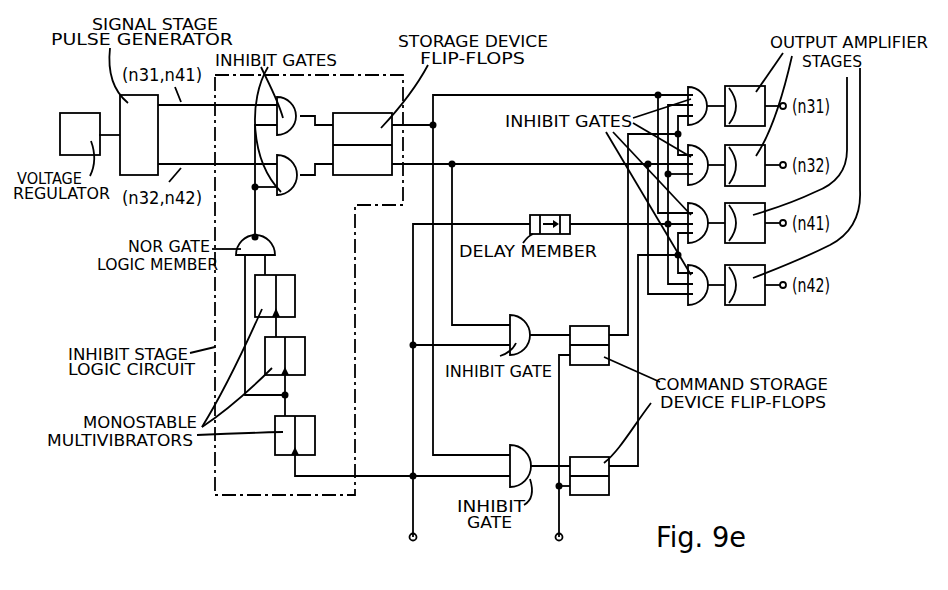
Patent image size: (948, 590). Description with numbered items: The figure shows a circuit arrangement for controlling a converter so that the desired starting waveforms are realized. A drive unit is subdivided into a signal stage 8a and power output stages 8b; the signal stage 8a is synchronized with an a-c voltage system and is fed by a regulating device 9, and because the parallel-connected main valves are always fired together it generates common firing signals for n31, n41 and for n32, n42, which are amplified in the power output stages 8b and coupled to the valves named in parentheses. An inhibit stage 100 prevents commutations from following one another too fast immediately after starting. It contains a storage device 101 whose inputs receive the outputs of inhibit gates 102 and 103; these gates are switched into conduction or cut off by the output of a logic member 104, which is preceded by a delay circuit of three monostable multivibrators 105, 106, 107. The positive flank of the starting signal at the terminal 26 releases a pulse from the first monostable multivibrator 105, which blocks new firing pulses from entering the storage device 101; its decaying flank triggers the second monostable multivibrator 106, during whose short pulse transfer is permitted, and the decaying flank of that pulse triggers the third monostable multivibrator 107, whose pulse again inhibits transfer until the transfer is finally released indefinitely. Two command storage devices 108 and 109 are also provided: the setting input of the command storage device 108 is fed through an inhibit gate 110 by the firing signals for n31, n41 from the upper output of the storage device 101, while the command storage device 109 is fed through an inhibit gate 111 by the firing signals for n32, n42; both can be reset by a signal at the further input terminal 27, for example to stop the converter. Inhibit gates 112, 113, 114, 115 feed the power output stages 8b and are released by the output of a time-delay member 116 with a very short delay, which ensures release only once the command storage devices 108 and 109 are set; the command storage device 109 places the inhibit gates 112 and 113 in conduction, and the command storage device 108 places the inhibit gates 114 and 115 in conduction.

The regulating device 9 is at (80, 134).
The signal stage 8a is at (139, 135).
The power output stages 8b is at (757, 75).
The inhibit stage 100 is at (215, 327).
The storage device 101 is at (354, 112).
The inhibit gate 102 is at (289, 106).
The inhibit gate 103 is at (287, 189).
The logic member 104 is at (275, 244).
The first monostable multivibrator 105 is at (309, 415).
The second monostable multivibrator 106 is at (306, 348).
The third monostable multivibrator 107 is at (295, 286).
The command storage device 108 is at (582, 457).
The command storage device 109 is at (582, 326).
The inhibit gate 110 is at (520, 445).
The inhibit gate 111 is at (517, 314).
The inhibit gate 112 is at (692, 87).
The inhibit gate 113 is at (692, 150).
The inhibit gate 114 is at (691, 209).
The inhibit gate 115 is at (691, 270).
The time-delay member 116 is at (536, 213).
The terminal 26 is at (417, 538).
The further input terminal 27 is at (563, 538).